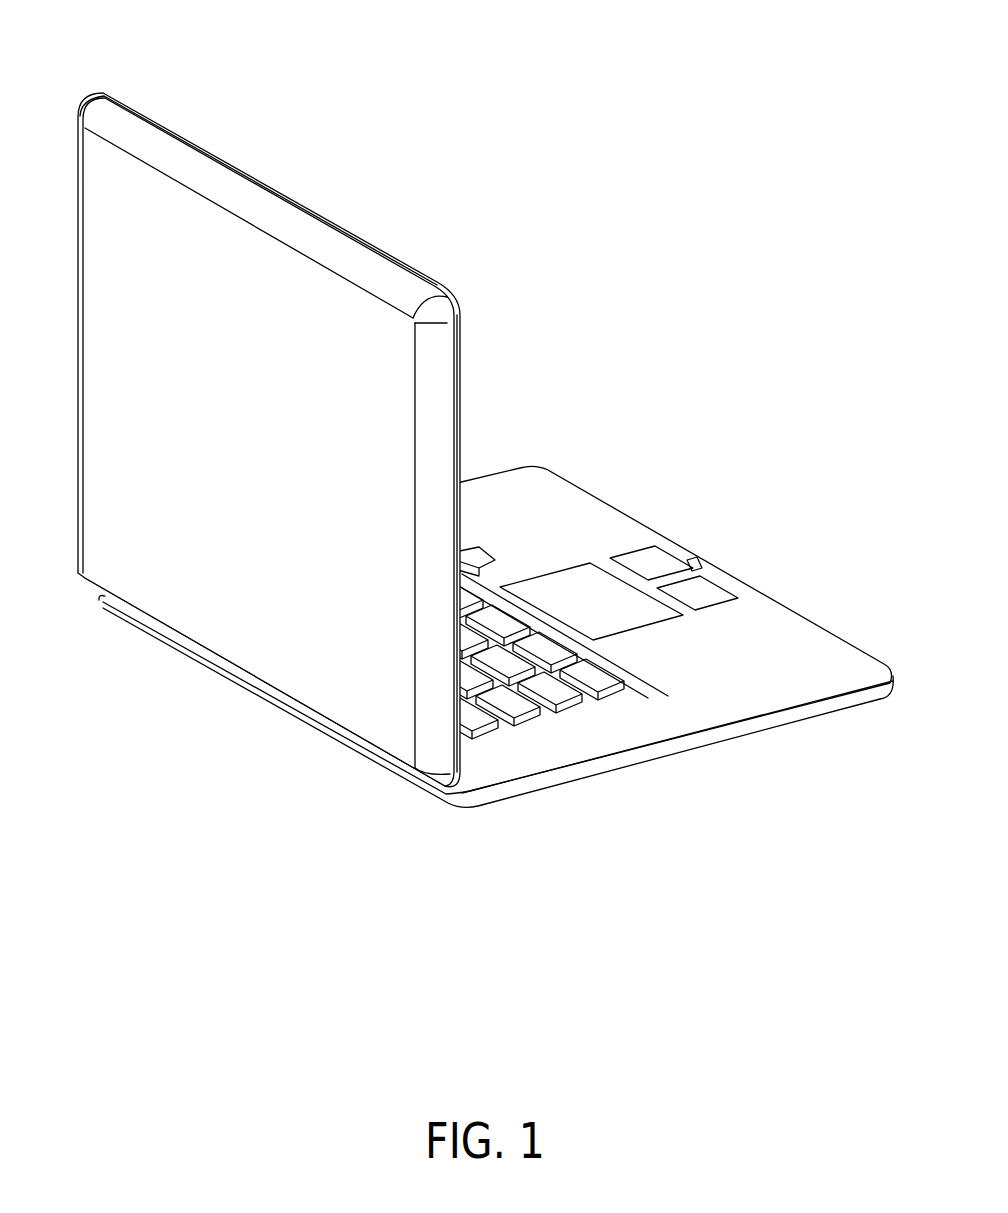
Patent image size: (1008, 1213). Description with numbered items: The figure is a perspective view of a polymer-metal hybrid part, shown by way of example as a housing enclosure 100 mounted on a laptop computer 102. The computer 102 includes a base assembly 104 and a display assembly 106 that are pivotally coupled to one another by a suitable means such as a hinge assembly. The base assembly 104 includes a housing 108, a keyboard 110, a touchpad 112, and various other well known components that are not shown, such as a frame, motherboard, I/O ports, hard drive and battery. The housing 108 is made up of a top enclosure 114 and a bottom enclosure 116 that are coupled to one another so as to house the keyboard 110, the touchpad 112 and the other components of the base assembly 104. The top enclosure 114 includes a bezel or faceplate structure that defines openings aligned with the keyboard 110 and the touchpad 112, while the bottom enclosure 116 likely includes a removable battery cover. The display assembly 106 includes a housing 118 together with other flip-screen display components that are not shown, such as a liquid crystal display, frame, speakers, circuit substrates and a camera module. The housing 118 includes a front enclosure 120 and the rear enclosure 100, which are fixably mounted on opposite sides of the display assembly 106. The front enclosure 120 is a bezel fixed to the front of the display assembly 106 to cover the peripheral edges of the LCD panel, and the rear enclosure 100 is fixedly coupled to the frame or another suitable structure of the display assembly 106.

The housing enclosure 100 is at (226, 609).
The laptop computer 102 is at (613, 131).
The base assembly 104 is at (495, 629).
The display assembly 106 is at (488, 395).
The housing 108 is at (820, 687).
The keyboard 110 is at (470, 757).
The touchpad 112 is at (490, 596).
The top enclosure 114 is at (800, 646).
The bottom enclosure 116 is at (582, 761).
The housing 118 is at (102, 158).
The front enclosure 120 is at (461, 447).